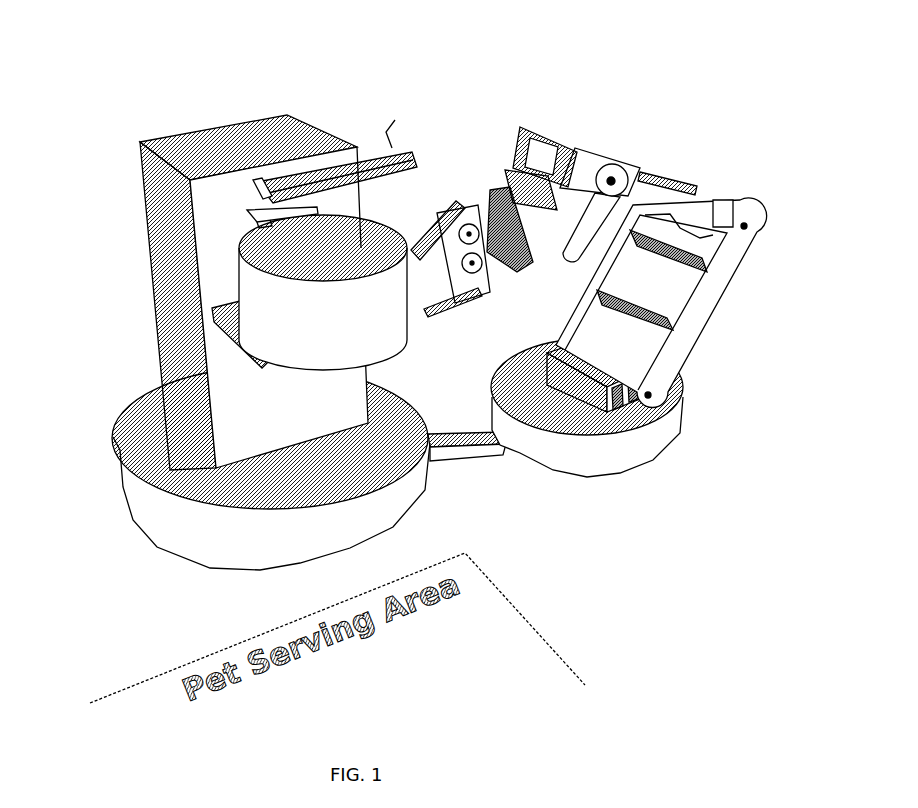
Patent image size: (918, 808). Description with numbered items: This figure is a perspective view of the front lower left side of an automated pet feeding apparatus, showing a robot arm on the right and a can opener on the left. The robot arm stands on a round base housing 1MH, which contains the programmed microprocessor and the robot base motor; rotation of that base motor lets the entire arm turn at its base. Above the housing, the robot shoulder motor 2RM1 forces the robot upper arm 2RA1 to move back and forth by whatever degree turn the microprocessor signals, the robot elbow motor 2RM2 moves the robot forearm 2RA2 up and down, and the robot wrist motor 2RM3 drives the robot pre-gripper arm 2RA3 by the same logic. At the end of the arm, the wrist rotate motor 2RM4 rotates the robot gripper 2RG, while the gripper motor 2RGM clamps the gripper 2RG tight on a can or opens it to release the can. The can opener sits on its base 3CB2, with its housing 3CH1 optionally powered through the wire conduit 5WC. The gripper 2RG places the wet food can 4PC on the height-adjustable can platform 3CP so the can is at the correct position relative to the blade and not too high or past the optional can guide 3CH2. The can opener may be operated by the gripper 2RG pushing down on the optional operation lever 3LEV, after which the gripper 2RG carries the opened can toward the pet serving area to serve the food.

The microprocessor and robot base motor housing 1MH is at (617, 453).
The robot upper arm 2RA1 is at (700, 305).
The robot forearm 2RA2 is at (657, 173).
The robot pre-gripper arm 2RA3 is at (595, 200).
The robot shoulder motor 2RM1 is at (650, 363).
The robot elbow motor 2RM2 is at (720, 187).
The robot wrist motor 2RM3 is at (608, 176).
The robot wrist rotate arm 2RM4 is at (523, 263).
The robot gripper 2RG is at (470, 205).
The gripper motor 2RGM is at (480, 213).
The can opener housing 3CH1 is at (152, 235).
The can opener can guide 3CH2 is at (313, 203).
The can opener operation lever 3LEV is at (408, 119).
The can platform 3CP is at (233, 355).
The can opener base 3CB2 is at (116, 432).
The wet food can 4PC is at (323, 292).
The wire conduit 5WC is at (463, 443).